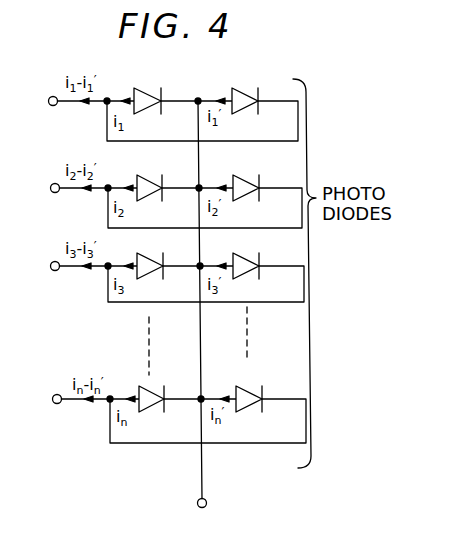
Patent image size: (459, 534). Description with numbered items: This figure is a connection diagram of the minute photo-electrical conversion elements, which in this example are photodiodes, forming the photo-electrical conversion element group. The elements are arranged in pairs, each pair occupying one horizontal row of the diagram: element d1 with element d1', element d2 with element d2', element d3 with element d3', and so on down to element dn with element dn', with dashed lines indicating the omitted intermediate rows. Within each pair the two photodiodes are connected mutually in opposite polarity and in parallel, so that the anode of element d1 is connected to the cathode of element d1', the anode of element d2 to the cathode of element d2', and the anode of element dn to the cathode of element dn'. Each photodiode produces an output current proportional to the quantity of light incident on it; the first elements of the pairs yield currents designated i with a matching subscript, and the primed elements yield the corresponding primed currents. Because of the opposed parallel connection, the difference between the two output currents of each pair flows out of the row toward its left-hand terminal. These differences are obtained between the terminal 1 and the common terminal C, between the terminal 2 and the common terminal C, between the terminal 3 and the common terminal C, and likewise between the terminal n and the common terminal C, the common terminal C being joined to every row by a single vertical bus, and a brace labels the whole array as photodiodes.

The terminal 1 is at (67, 101).
The terminal 2 is at (68, 188).
The terminal 3 is at (68, 266).
The terminal n is at (74, 388).
The common terminal C is at (212, 309).
The minute photo-electrical conversion element d1 is at (152, 87).
The minute photo-electrical conversion element d1' is at (255, 87).
The minute photo-electrical conversion element d2 is at (160, 175).
The minute photo-electrical conversion element d2' is at (263, 176).
The minute photo-electrical conversion element d3 is at (161, 257).
The minute photo-electrical conversion element d3' is at (263, 257).
The minute photo-electrical conversion element dn is at (161, 385).
The minute photo-electrical conversion element dn' is at (263, 385).